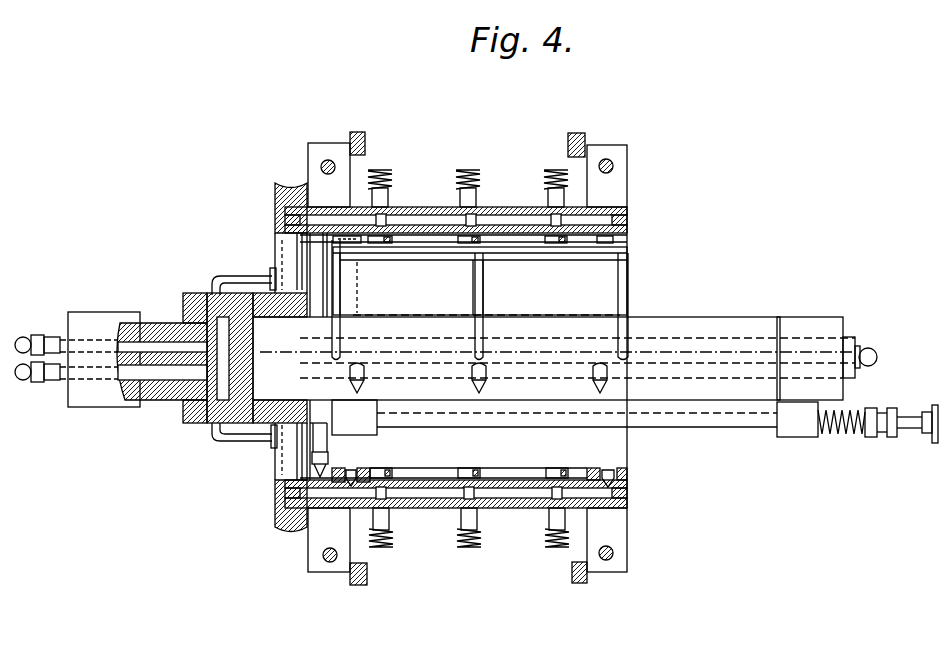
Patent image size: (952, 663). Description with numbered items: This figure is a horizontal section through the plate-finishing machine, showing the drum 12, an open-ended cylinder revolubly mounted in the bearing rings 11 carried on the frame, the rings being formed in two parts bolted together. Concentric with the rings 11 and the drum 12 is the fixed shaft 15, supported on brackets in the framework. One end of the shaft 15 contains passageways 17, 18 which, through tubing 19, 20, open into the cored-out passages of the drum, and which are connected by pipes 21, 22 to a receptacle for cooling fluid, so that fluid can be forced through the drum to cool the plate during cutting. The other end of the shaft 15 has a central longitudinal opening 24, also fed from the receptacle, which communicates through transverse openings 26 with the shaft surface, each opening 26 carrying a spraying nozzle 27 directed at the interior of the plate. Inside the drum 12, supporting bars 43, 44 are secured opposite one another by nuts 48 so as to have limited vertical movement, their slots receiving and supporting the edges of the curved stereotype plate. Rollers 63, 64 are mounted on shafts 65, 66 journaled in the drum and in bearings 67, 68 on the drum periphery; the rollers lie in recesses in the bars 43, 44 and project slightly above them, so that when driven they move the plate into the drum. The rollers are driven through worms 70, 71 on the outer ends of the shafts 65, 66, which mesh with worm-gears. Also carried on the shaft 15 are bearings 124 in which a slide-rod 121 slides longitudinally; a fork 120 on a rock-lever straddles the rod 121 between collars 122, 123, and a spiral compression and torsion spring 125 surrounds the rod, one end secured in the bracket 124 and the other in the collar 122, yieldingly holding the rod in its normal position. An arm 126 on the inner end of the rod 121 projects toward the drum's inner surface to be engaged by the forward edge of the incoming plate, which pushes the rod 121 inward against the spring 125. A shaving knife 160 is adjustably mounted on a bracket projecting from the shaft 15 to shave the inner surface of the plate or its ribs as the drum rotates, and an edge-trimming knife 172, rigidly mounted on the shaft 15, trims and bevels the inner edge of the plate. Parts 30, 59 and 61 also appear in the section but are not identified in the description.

The bearing rings 11 is at (322, 150).
The drum 12 is at (628, 500).
The fixed shaft 15 is at (686, 326).
The passageway 17 is at (155, 330).
The passageway 18 is at (168, 398).
The tubing 19 is at (239, 278).
The tubing 20 is at (260, 443).
The pipe 21 is at (26, 336).
The pipe 22 is at (25, 381).
The central longitudinal opening 24 is at (722, 350).
The transverse openings 26 is at (366, 373).
The spraying nozzles 27 is at (355, 386).
The casting 30 is at (287, 532).
The supporting bar 43 is at (490, 476).
The supporting bar 44 is at (410, 234).
The nuts 48 is at (352, 246).
The stop block 59 is at (365, 135).
The stop block 61 is at (577, 133).
The roller 63 is at (393, 470).
The roller 64 is at (393, 243).
The shaft 65 is at (384, 497).
The shaft 66 is at (470, 217).
The bearing 67 is at (386, 518).
The bearing 68 is at (386, 197).
The worm 70 is at (392, 539).
The worm 71 is at (392, 176).
The fork 120 is at (884, 407).
The slide-rod 121 is at (706, 426).
The collar 122 is at (868, 349).
The collar 123 is at (897, 418).
The bearings 124 is at (805, 432).
The spiral compression and torsion spring 125 is at (838, 432).
The arm 126 is at (329, 450).
The shaving knife 160 is at (616, 289).
The edge-trimming knife 172 is at (315, 242).